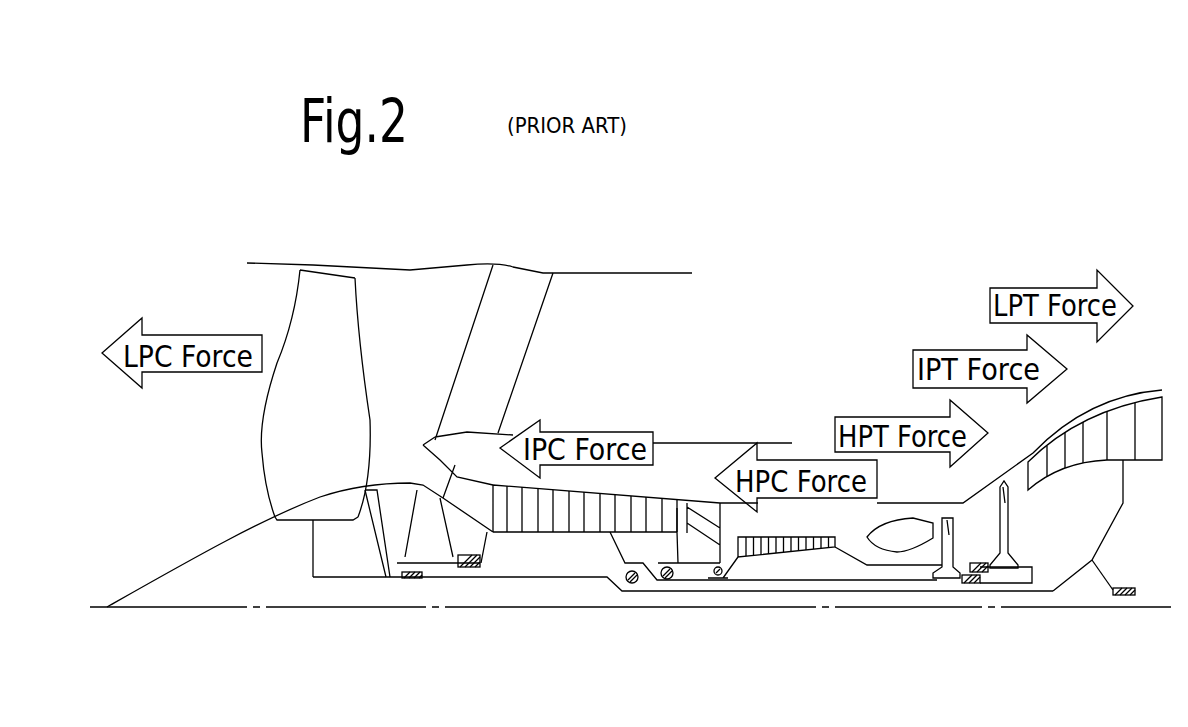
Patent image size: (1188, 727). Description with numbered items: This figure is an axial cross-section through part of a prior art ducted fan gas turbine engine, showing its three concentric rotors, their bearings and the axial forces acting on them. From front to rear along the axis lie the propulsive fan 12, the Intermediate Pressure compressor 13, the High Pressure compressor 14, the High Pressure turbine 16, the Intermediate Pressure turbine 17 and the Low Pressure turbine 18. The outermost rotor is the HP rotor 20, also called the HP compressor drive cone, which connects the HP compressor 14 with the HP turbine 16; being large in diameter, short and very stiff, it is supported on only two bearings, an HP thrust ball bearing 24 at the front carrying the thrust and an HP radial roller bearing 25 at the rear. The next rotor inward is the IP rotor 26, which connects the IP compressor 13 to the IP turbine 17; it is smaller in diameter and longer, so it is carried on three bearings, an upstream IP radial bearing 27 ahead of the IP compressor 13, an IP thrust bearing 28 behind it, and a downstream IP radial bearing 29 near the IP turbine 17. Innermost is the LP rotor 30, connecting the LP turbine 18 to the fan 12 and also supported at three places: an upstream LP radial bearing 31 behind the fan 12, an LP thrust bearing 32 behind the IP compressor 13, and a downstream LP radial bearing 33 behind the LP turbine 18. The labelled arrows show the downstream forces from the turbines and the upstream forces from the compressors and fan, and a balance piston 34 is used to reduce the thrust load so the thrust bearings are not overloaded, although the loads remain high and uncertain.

The propulsive fan 12 is at (322, 300).
The Intermediate Pressure (IP) compressor 13 is at (583, 517).
The High Pressure (HP) compressor 14 is at (762, 537).
The High Pressure (HP) turbine 16 is at (947, 522).
The Intermediate Pressure (IP) turbine 17 is at (1002, 478).
The Low Pressure (LP) turbine 18 is at (1123, 418).
The High Pressure (HP) rotor 20 is at (850, 552).
The HP thrust ball bearing 24 is at (720, 578).
The HP radial (roller) bearing 25 is at (967, 580).
The Intermediate Pressure (IP) rotor 26 is at (617, 540).
The upstream IP radial bearing 27 is at (473, 570).
The IP thrust bearing 28 is at (668, 580).
The downstream IP radial bearing 29 is at (983, 565).
The low pressure (LP) rotor 30 is at (607, 581).
The upstream LP radial bearing 31 is at (413, 578).
The LP thrust bearing 32 is at (632, 583).
The downstream LP radial bearing 33 is at (1122, 594).
The balance piston 34 is at (380, 529).